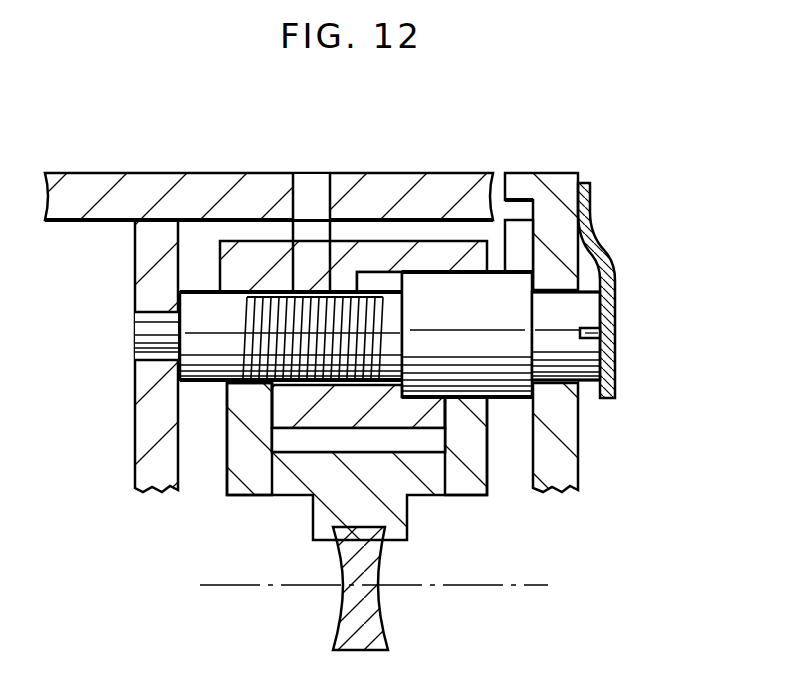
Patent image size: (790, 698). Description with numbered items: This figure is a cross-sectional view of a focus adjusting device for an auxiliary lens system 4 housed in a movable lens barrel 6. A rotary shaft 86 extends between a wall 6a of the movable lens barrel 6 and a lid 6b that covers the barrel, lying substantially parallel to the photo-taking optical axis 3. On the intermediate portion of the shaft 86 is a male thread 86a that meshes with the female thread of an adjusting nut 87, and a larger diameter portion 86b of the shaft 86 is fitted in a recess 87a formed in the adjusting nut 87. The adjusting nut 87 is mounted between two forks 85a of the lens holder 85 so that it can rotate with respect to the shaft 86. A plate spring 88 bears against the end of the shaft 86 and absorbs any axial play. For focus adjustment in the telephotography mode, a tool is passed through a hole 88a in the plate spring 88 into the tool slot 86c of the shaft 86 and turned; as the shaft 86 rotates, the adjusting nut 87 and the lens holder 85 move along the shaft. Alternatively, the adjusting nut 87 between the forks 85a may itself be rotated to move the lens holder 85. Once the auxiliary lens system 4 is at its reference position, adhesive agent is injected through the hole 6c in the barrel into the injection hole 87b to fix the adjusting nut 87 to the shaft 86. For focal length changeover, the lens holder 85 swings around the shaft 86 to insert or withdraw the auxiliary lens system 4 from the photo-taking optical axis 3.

The photo-taking optical axis 3 is at (262, 600).
The auxiliary lens system 4 is at (370, 620).
The movable lens barrel 6 is at (80, 195).
The wall 6a is at (150, 410).
The lid 6b is at (570, 443).
The hole 6c is at (308, 195).
The lens holder 85 is at (403, 497).
The forks 85a is at (240, 405).
The rotary shaft 86 is at (197, 340).
The male thread 86a is at (385, 313).
The larger diameter portion 86b is at (513, 285).
The tool slot 86c is at (613, 348).
The adjusting nut 87 is at (302, 433).
The recess 87a is at (375, 285).
The injection hole 87b is at (318, 265).
The plate spring 88 is at (614, 268).
The hole 88a is at (617, 330).